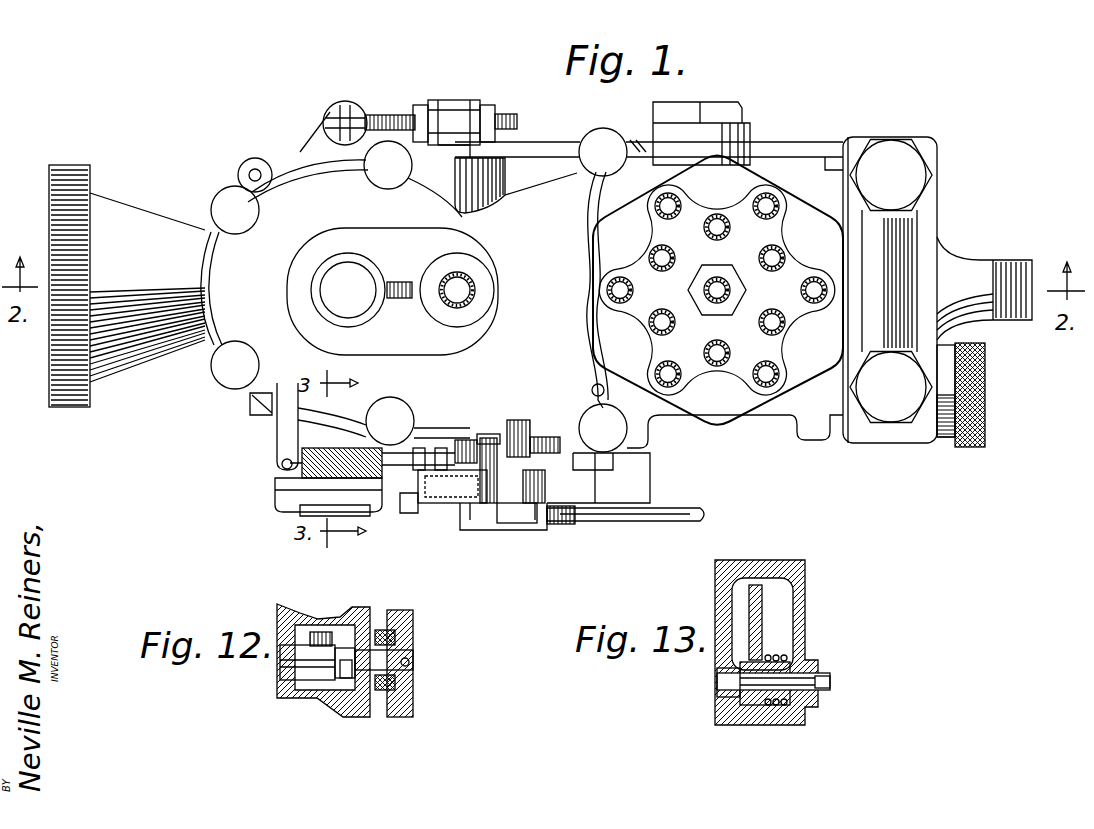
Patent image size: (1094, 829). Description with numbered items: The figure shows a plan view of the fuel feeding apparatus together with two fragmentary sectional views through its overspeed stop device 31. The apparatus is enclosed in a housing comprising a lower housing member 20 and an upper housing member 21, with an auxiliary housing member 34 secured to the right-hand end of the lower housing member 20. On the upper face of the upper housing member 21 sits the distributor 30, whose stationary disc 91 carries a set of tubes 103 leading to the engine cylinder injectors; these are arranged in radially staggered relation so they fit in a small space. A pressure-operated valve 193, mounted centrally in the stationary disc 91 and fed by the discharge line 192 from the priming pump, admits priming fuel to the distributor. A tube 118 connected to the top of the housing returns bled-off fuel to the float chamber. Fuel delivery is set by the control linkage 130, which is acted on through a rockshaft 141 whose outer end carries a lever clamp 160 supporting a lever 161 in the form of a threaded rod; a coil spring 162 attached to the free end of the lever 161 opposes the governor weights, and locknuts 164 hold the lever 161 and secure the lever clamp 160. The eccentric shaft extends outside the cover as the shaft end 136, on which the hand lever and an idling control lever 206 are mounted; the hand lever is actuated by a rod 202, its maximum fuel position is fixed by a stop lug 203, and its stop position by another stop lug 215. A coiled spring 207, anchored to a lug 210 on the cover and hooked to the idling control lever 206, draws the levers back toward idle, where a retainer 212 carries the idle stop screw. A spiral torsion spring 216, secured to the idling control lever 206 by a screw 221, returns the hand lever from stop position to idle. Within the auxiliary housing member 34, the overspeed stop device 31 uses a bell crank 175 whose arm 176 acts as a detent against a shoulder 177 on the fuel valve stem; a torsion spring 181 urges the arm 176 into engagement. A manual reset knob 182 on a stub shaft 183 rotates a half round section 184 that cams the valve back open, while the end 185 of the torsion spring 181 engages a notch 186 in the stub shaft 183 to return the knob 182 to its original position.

In FIG. 1, the lower housing member 20 is at (70, 407).
In FIG. 1, the upper housing member 21 is at (793, 395).
In FIG. 1, the distributor 30 is at (730, 376).
In FIG. 13, the overspeed stop device 31 is at (708, 660).
In FIG. 1, the auxiliary housing member 34 is at (918, 428).
In FIG. 12, the auxiliary housing member 34 is at (358, 615).
In FIG. 13, the auxiliary housing member 34 is at (800, 568).
In FIG. 1, the stationary disc 91 is at (707, 382).
In FIG. 1, the tube 103 is at (675, 217).
In FIG. 1, the tube 118 is at (470, 297).
In FIG. 1, the control linkage 130 is at (552, 246).
In FIG. 1, the outer end of shaft 136 is at (470, 505).
In FIG. 1, the rockshaft 141 is at (513, 145).
In FIG. 1, the lever clamp 160 is at (474, 100).
In FIG. 1, the lever 161 is at (384, 112).
In FIG. 1, the coil spring 162 is at (345, 101).
In FIG. 1, the locknuts 164 is at (500, 94).
In FIG. 13, the bell crank 175 is at (752, 703).
In FIG. 13, the arm 176 is at (762, 607).
In FIG. 12, the shoulder 177 is at (320, 630).
In FIG. 13, the torsion spring 181 is at (775, 708).
In FIG. 1, the manual reset knob 182 is at (985, 381).
In FIG. 12, the manual reset knob 182 is at (415, 618).
In FIG. 12, the stub shaft 183 is at (410, 660).
In FIG. 12, the half round section 184 is at (313, 678).
In FIG. 12, the end of torsion spring 185 is at (344, 680).
In FIG. 12, the notch 186 is at (336, 680).
In FIG. 1, the discharge line 192 is at (713, 300).
In FIG. 1, the pressure-operated valve 193 is at (748, 290).
In FIG. 1, the rod 202 is at (622, 522).
In FIG. 1, the stop lug 203 is at (405, 512).
In FIG. 1, the idling control lever 206 is at (522, 420).
In FIG. 1, the coiled spring 207 is at (283, 486).
In FIG. 1, the lug 210 is at (277, 440).
In FIG. 1, the retainer 212 is at (505, 385).
In FIG. 1, the stop lug 215 is at (600, 470).
In FIG. 1, the spiral torsion spring 216 is at (530, 525).
In FIG. 1, the screw 221 is at (505, 530).